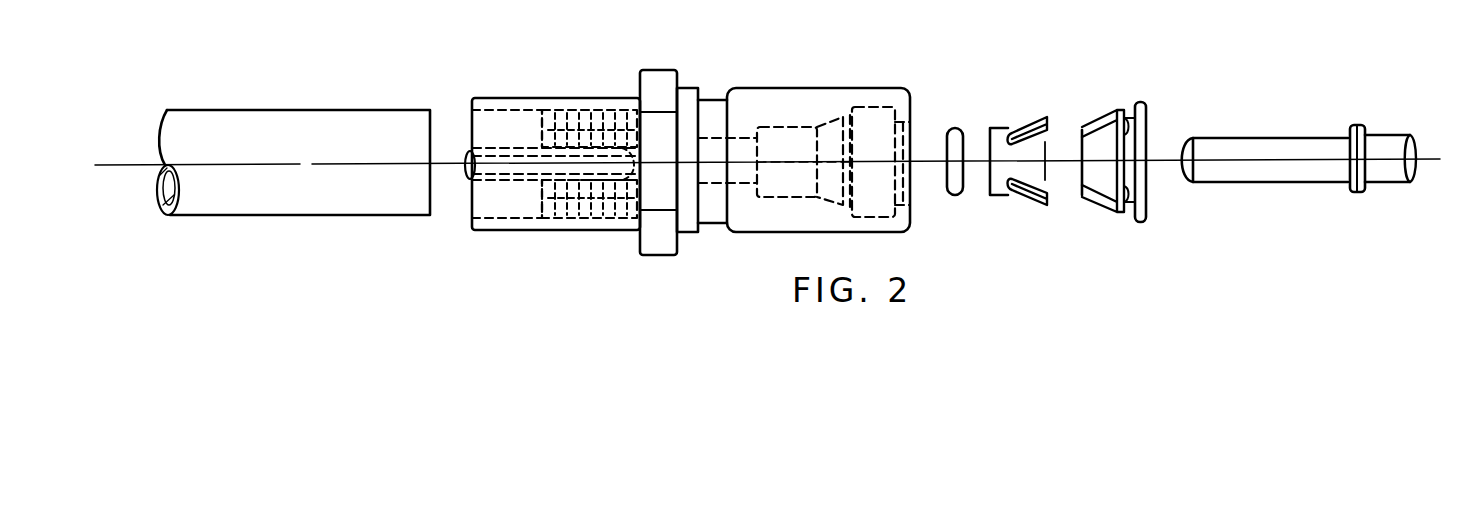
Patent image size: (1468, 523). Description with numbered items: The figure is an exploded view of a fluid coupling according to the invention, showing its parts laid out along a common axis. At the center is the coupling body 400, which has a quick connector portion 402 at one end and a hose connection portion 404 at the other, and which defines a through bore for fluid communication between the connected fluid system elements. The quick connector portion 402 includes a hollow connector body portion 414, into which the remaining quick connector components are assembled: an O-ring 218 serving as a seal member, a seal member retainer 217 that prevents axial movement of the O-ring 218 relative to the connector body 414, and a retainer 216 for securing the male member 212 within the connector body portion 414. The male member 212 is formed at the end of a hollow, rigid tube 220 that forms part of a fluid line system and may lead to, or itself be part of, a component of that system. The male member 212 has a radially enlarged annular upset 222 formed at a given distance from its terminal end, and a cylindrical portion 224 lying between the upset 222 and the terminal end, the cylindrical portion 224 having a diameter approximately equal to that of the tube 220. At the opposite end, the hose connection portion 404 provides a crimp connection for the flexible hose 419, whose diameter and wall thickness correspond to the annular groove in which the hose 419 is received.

The flexible hose 419 is at (333, 110).
The hose connection portion 404 is at (510, 93).
The coupling body 400 is at (714, 74).
The connector body portion 414 is at (752, 88).
The quick connector portion 402 is at (823, 81).
The O-ring 218 is at (956, 128).
The seal member retainer 217 is at (1037, 118).
The retainer 216 is at (1112, 112).
The male member 212 is at (1290, 138).
The tube 220 is at (1390, 134).
The annular upset 222 is at (1352, 193).
The cylindrical portion 224 is at (1213, 183).